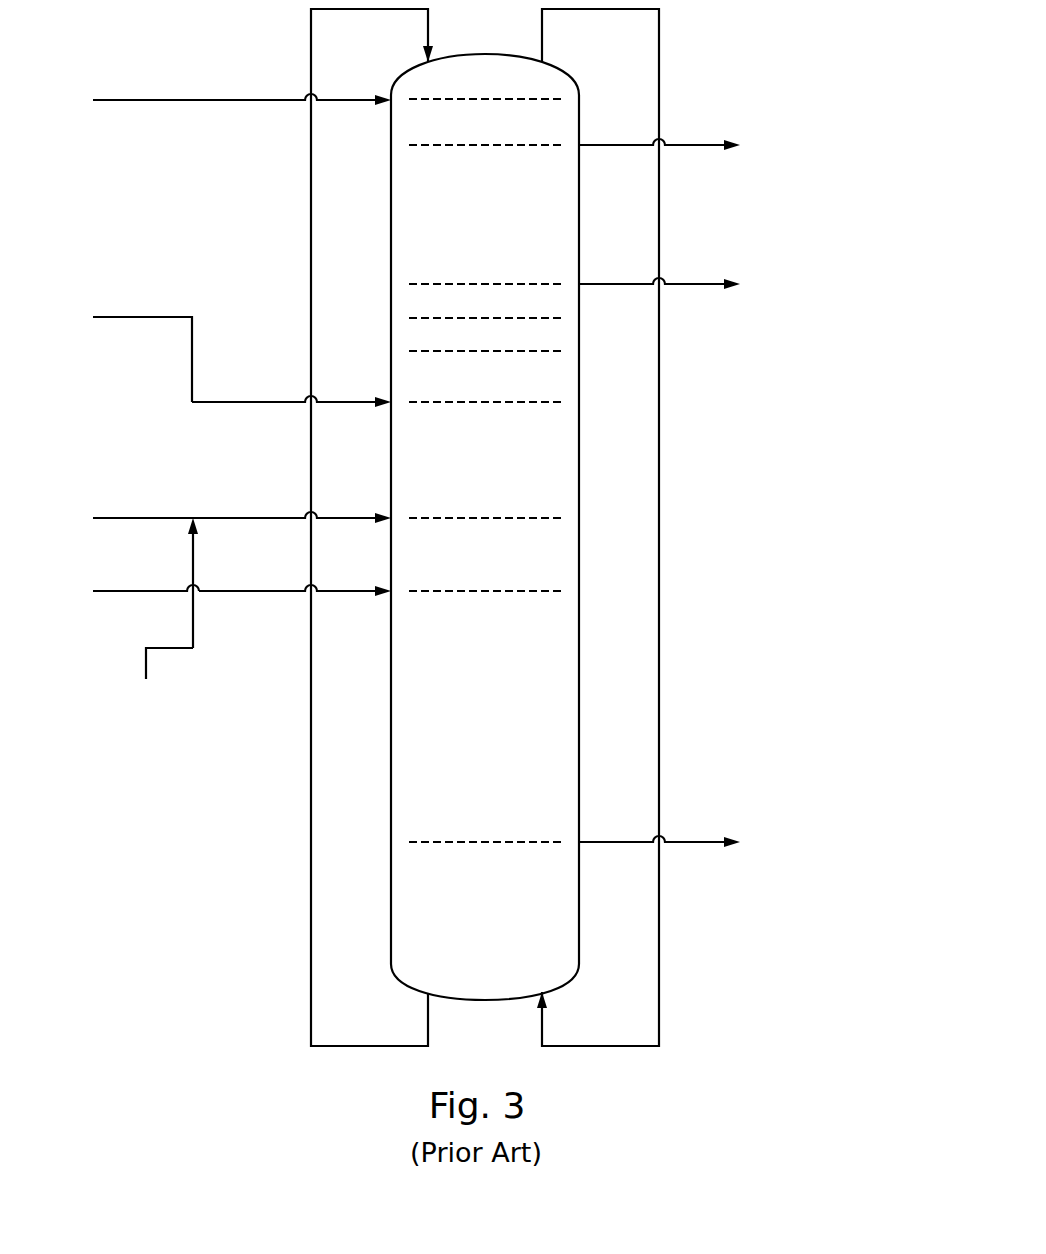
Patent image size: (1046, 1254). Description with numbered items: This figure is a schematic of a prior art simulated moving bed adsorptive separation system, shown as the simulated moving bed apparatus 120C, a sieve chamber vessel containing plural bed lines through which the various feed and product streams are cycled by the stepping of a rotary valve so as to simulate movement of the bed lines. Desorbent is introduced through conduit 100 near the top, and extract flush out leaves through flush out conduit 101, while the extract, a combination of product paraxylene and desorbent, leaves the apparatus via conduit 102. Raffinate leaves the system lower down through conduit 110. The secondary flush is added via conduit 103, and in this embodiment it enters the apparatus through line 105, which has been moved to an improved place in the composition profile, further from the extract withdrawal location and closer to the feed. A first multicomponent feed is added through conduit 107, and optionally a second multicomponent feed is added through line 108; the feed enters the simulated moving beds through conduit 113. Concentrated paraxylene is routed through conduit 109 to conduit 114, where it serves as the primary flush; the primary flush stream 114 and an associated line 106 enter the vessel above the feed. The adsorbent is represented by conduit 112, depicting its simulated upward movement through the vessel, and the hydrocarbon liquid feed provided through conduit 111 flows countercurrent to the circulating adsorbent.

The desorbent conduit 100 is at (117, 100).
The flush out conduit 101 is at (690, 145).
The extract conduit 102 is at (690, 284).
The secondary flush conduit 103 is at (117, 317).
The secondary flush entry line 105 is at (238, 403).
The third feed stream 106 is at (117, 518).
The first multicomponent feed conduit 107 is at (117, 591).
The second multicomponent feed line 108 is at (145, 664).
The concentrated paraxylene conduit 109 is at (173, 650).
The raffinate conduit 110 is at (690, 842).
The hydrocarbon liquid feed conduit 111 is at (312, 901).
The adsorbent conduit 112 is at (659, 950).
The feed conduit 113 is at (283, 588).
The primary flush conduit 114 is at (266, 518).
The simulated moving bed apparatus 120C is at (538, 710).